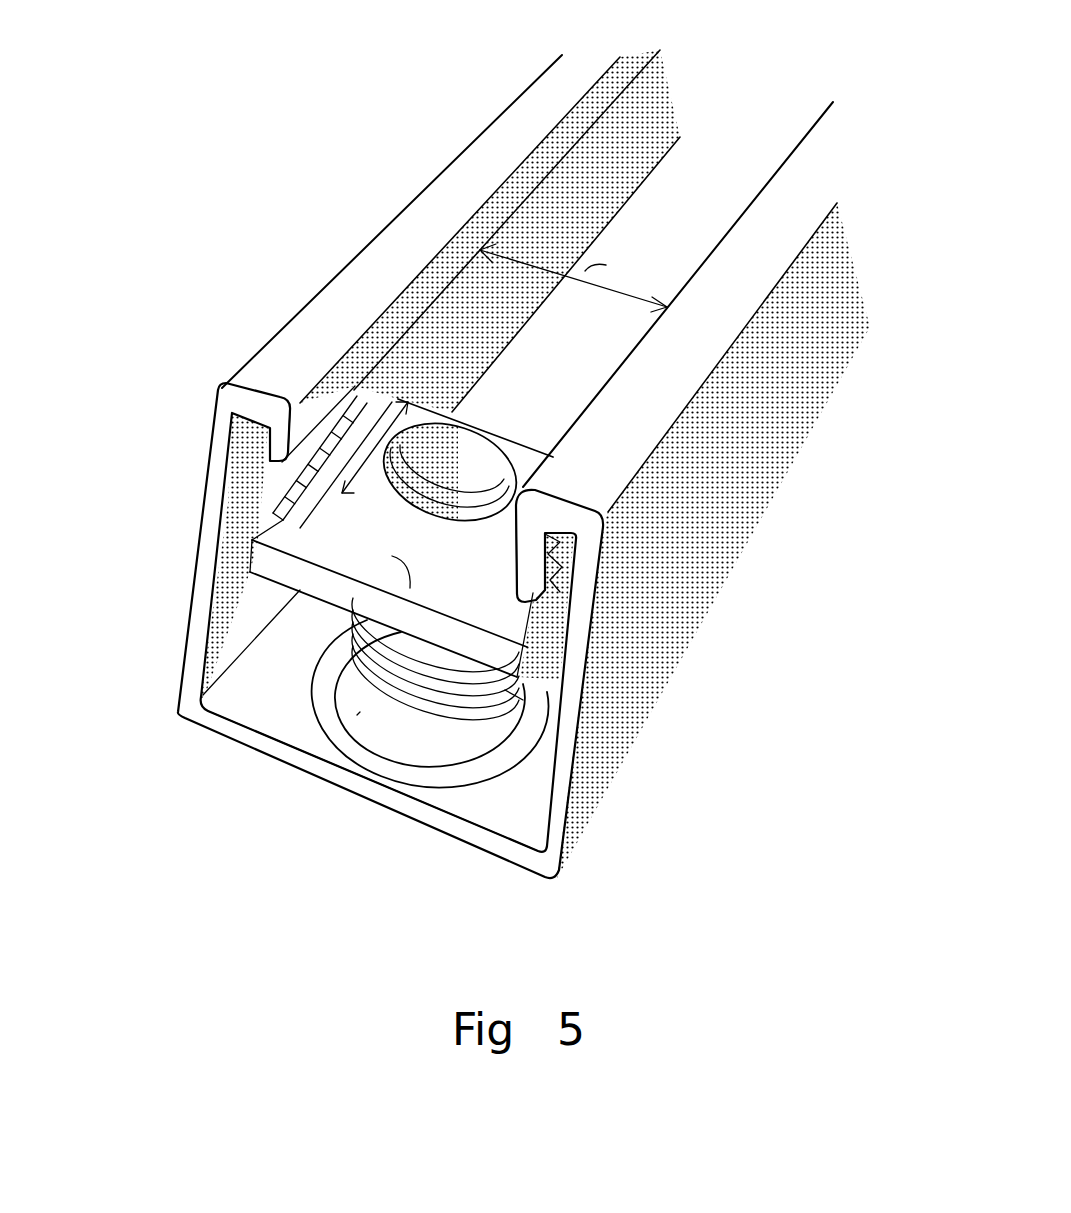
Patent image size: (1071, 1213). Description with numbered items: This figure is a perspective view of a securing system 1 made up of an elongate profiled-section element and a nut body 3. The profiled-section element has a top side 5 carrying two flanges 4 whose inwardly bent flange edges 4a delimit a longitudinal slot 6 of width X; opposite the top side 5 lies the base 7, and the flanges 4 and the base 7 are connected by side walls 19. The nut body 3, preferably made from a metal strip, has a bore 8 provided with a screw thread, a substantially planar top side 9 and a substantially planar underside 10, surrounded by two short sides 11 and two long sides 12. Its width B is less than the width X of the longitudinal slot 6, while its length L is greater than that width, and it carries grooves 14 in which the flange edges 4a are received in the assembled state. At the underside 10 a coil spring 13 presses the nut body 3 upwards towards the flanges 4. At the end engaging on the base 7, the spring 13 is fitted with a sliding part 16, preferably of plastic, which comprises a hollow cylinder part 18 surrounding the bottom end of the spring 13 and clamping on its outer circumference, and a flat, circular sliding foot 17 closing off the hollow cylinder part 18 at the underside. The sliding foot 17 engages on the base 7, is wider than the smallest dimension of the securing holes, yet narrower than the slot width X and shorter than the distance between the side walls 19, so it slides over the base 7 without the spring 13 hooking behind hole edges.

The securing system 1 is at (697, 895).
The nut body 3 is at (520, 660).
The flanges 4 is at (280, 357).
The flange edges 4a is at (280, 438).
The top side 5 is at (662, 255).
The longitudinal slot 6 is at (500, 393).
The base 7 is at (277, 715).
The bore 8 is at (466, 453).
The top side 9 is at (530, 450).
The underside 10 is at (318, 606).
The short sides 11 is at (280, 552).
The long sides 12 is at (505, 690).
The coil spring 13 is at (347, 637).
The grooves 14 is at (272, 535).
The sliding part 16 is at (357, 715).
The sliding foot 17 is at (453, 773).
The hollow cylinder part 18 is at (377, 727).
The side walls 19 is at (205, 578).